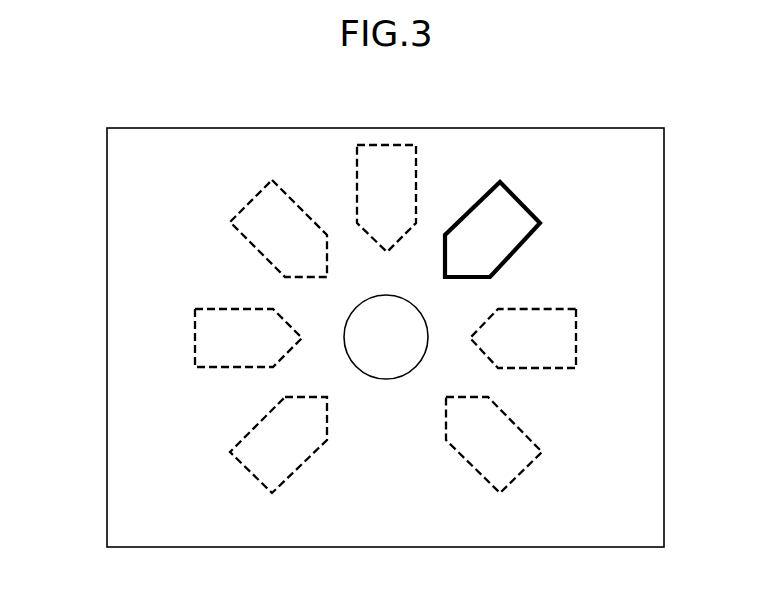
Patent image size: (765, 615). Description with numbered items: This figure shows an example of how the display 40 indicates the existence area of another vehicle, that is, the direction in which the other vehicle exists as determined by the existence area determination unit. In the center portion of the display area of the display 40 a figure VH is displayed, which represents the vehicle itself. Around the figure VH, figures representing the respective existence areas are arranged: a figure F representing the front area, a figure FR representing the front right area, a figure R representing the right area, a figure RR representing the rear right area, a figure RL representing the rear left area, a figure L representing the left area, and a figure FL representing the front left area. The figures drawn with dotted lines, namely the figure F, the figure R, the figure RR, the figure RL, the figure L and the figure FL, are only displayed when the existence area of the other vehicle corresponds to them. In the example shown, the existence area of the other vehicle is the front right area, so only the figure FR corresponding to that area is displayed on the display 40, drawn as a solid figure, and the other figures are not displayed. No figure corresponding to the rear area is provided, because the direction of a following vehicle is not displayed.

The display 40 is at (71, 107).
The figure FL is at (252, 199).
The figure F is at (387, 145).
The figure FR is at (524, 200).
The figure L is at (195, 338).
The figure R is at (578, 335).
The figure VH is at (383, 380).
The figure RL is at (255, 478).
The figure RR is at (518, 478).